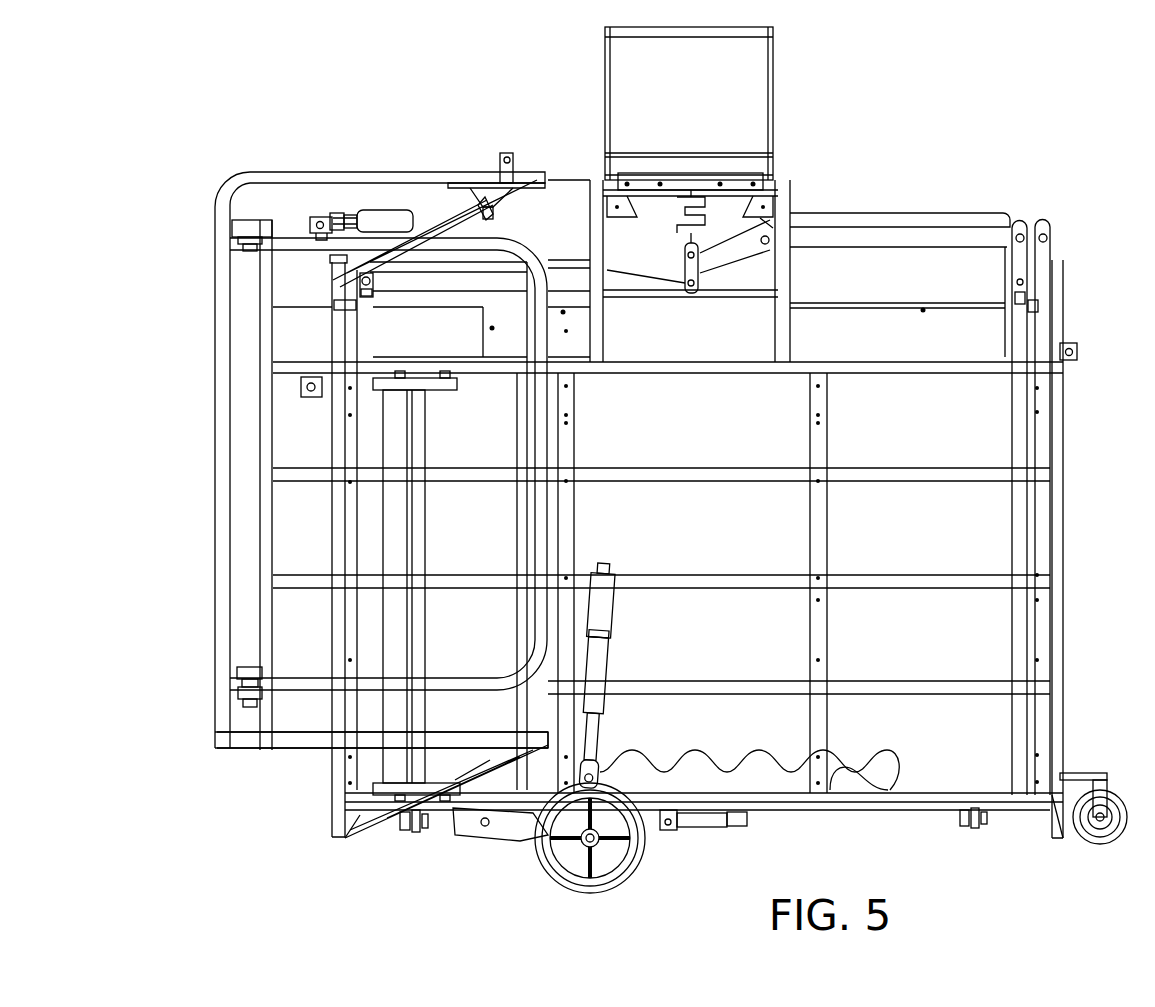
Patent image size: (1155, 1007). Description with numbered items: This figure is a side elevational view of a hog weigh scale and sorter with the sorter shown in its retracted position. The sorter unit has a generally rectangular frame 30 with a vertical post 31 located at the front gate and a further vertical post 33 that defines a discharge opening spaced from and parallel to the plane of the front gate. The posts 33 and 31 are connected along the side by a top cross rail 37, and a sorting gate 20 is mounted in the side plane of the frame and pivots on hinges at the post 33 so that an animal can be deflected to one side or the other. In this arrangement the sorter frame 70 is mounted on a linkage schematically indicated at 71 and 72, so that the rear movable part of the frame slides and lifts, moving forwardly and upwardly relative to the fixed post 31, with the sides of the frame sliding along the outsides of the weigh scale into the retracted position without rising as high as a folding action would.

The sorting gate 20 is at (253, 330).
The frame 30 is at (340, 180).
The vertical post 31 is at (322, 423).
The vertical post 33 is at (205, 388).
The top cross rail 37 is at (303, 743).
The sorter frame 70 is at (423, 158).
The linkage 71 is at (380, 822).
The linkage 72 is at (440, 227).